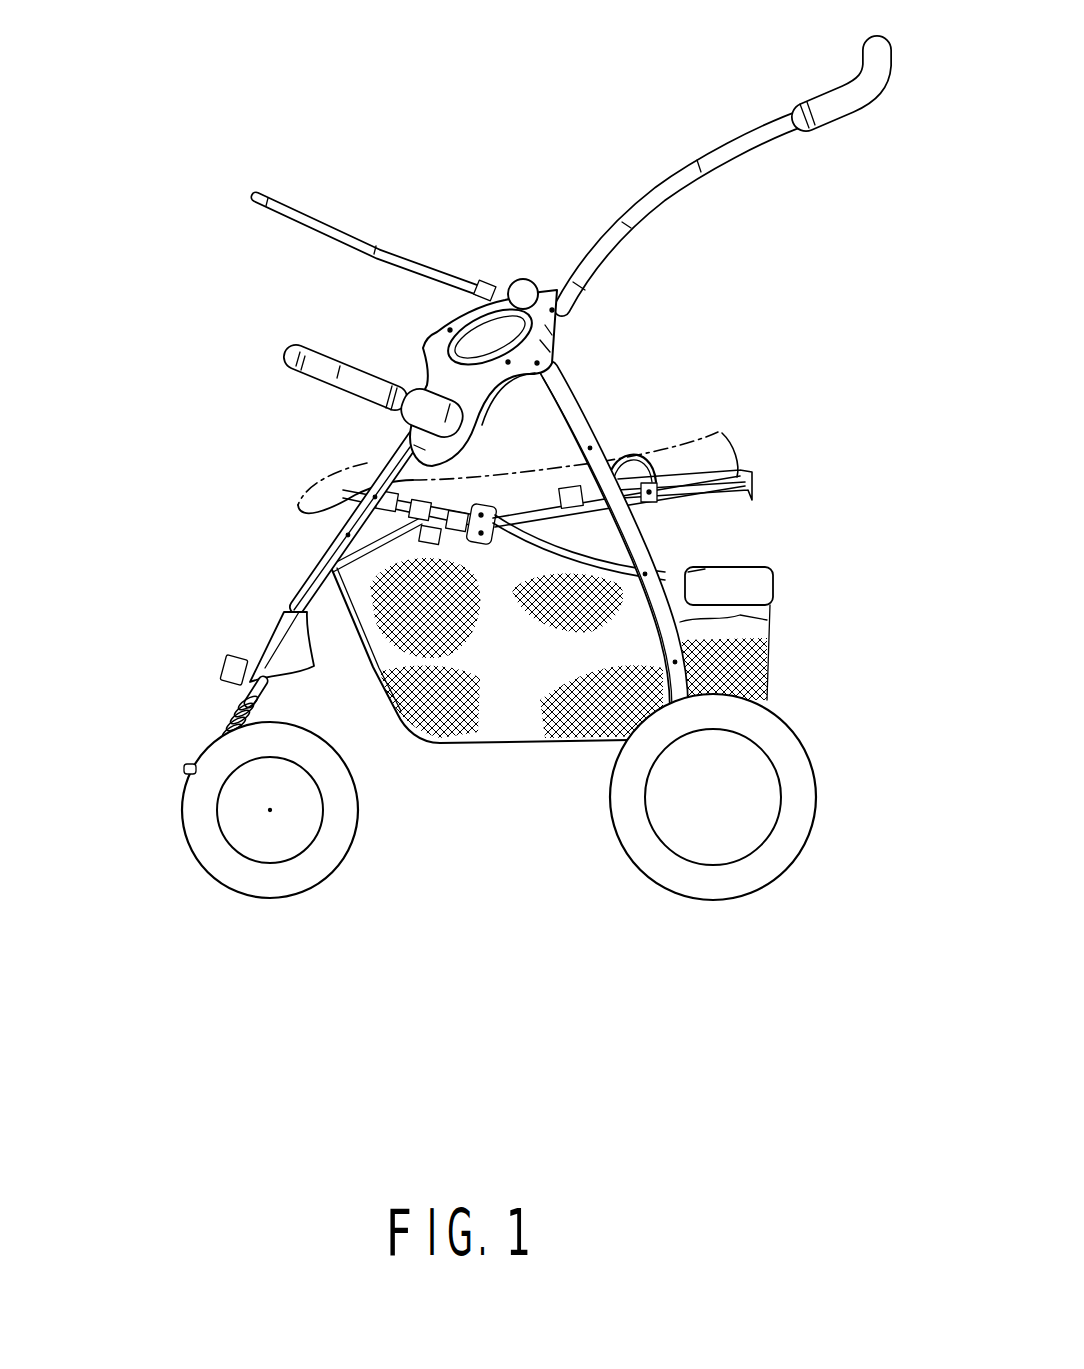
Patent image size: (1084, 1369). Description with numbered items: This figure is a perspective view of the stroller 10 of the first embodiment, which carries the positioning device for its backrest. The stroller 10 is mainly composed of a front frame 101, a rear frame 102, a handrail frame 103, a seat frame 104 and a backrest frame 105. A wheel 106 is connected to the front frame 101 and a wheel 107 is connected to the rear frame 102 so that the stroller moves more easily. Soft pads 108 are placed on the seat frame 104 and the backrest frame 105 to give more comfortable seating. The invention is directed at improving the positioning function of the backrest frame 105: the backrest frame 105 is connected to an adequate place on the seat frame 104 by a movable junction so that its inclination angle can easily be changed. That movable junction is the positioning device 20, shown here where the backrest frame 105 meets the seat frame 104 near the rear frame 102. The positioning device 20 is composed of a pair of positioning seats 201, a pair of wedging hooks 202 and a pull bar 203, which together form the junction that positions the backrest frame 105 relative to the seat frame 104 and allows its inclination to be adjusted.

The stroller 10 is at (250, 512).
The front frame 101 is at (283, 600).
The rear frame 102 is at (670, 623).
The handrail frame 103 is at (730, 143).
The seat frame 104 is at (570, 560).
The backrest frame 105 is at (727, 457).
The wheel 106 is at (297, 873).
The wheel 107 is at (780, 847).
The soft pads 108 is at (305, 505).
The positioning device 20 is at (652, 422).
The positioning seat 201 is at (558, 377).
The wedging hook 202 is at (648, 453).
The pull bar 203 is at (740, 477).